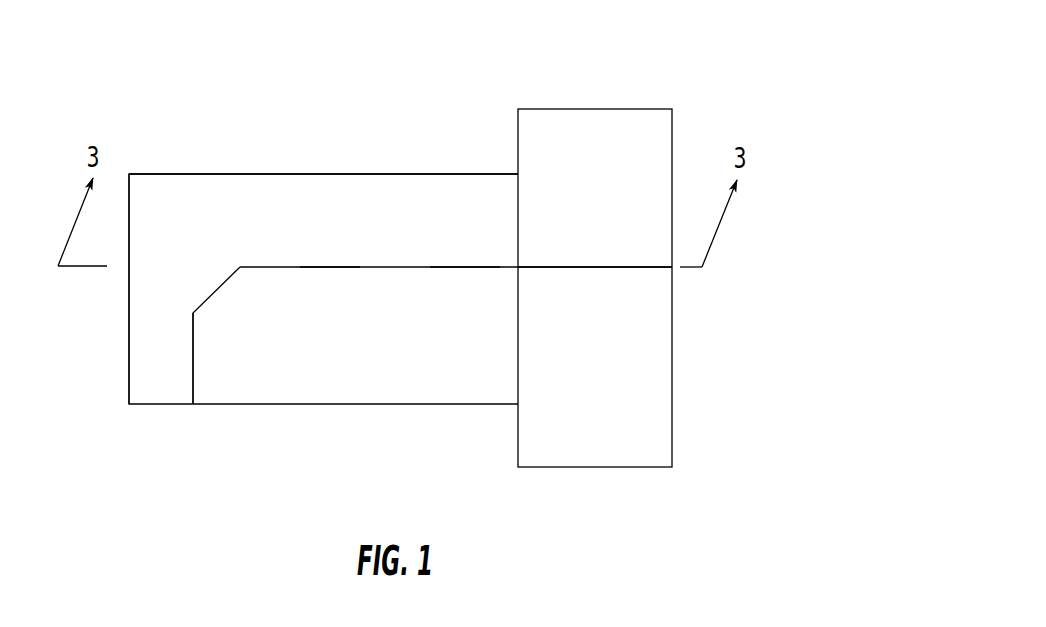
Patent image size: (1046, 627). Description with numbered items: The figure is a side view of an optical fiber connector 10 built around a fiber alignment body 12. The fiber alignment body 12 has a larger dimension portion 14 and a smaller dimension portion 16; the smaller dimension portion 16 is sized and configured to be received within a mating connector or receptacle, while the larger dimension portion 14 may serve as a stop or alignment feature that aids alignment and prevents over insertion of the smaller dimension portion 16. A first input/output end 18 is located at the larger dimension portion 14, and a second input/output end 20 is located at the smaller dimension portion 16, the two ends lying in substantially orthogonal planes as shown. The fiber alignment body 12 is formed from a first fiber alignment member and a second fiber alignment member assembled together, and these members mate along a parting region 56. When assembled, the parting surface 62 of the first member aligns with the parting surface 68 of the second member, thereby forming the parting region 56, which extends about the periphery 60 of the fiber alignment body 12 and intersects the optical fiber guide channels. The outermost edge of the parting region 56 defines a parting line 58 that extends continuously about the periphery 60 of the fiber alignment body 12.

The optical fiber connector 10 is at (732, 73).
The fiber alignment body 12 is at (331, 183).
The larger dimension portion 14 is at (620, 487).
The smaller dimension portion 16 is at (160, 430).
The first input/output end 18 is at (712, 286).
The second input/output end 20 is at (210, 432).
The parting region 56 is at (187, 357).
The parting line 58 is at (462, 267).
The periphery 60 is at (426, 193).
The parting surface 62 is at (277, 266).
The parting surface 68 is at (325, 267).